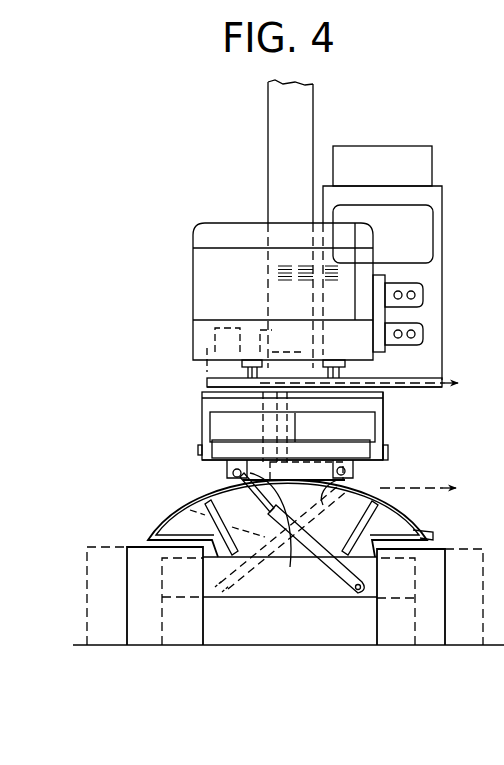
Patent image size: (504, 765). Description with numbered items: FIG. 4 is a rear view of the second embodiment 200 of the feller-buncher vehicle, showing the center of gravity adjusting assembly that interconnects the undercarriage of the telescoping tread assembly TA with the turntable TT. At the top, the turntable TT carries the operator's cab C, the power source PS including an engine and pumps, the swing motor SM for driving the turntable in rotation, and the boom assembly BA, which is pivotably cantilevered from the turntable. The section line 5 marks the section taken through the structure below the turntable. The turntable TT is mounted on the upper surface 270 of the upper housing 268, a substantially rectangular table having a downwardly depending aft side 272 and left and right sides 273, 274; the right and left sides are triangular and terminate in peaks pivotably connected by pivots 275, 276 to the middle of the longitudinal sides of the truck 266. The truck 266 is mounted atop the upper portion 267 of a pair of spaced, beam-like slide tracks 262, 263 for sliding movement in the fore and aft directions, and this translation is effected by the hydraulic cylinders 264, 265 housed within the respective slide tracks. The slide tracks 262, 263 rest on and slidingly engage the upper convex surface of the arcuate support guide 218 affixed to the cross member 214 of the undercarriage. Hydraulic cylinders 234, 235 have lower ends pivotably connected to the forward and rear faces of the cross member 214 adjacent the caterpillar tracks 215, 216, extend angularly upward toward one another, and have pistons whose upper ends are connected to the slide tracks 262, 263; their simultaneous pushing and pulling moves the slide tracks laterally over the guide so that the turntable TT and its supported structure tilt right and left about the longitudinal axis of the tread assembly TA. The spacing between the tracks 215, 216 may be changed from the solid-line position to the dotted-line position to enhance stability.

The second embodiment of the mobile land vehicle 200 is at (418, 82).
The boom assembly BA is at (298, 117).
The operator's cab C is at (427, 197).
The power source PS is at (218, 233).
The swing motor SM is at (223, 370).
The turntable TT is at (220, 388).
The section line 5- 5 is at (367, 439).
The aft side 272 is at (228, 403).
The left side 273 is at (200, 425).
The truck 266 is at (345, 437).
The right side 274 is at (382, 438).
The pivot 275 is at (200, 450).
The pivot 276 is at (388, 450).
The upper housing 268 is at (387, 405).
The upper surface 270 is at (384, 393).
The upper portion 267 is at (215, 461).
The slide track 262 is at (227, 467).
The slide track 263 is at (355, 475).
The hydraulic cylinder 234 is at (185, 500).
The convex support guide 218 is at (430, 528).
The hydraulic cylinder 235 is at (323, 550).
The hydraulic cylinder 264 is at (276, 532).
The hydraulic cylinder 265 is at (333, 506).
The cross member 214 is at (320, 585).
The caterpillar track 215 is at (187, 627).
The caterpillar track 216 is at (425, 633).
The telescoping tread assembly TA is at (328, 652).